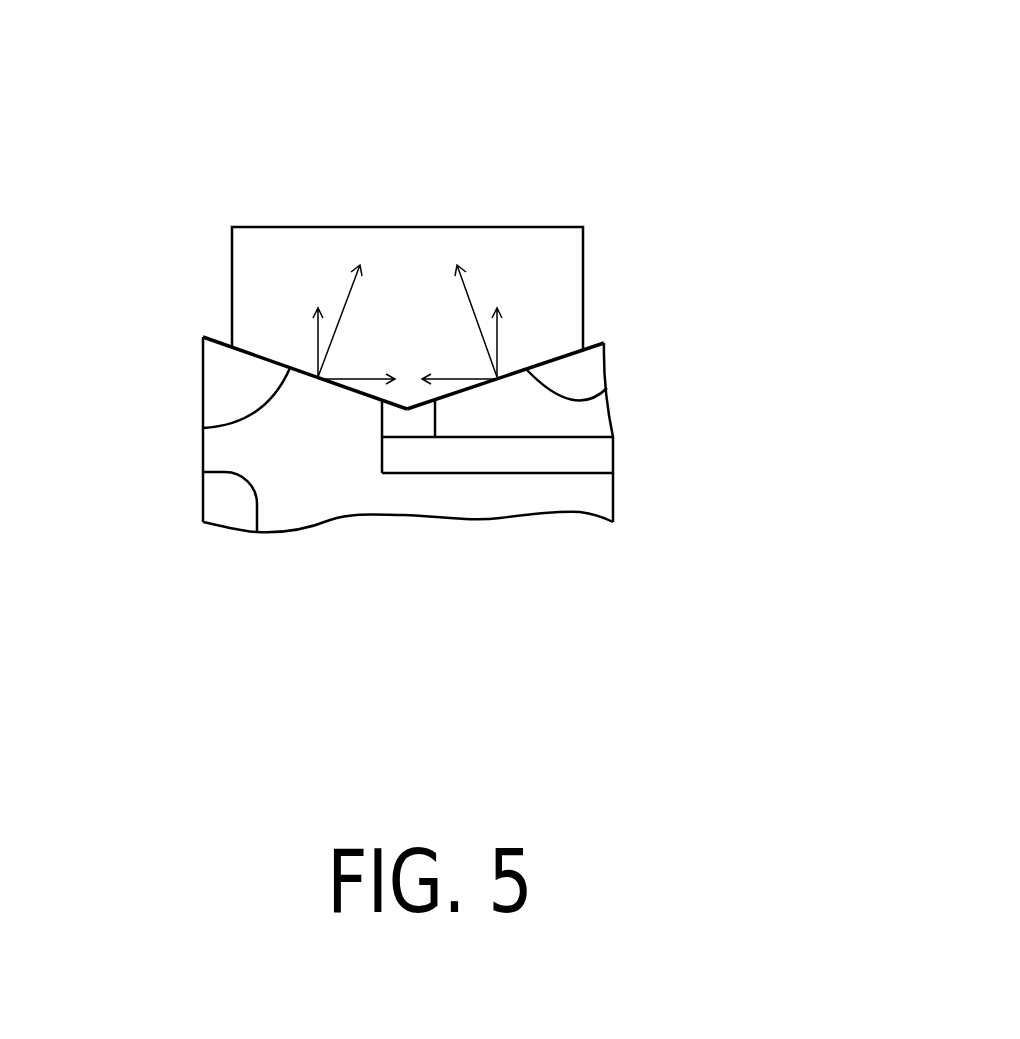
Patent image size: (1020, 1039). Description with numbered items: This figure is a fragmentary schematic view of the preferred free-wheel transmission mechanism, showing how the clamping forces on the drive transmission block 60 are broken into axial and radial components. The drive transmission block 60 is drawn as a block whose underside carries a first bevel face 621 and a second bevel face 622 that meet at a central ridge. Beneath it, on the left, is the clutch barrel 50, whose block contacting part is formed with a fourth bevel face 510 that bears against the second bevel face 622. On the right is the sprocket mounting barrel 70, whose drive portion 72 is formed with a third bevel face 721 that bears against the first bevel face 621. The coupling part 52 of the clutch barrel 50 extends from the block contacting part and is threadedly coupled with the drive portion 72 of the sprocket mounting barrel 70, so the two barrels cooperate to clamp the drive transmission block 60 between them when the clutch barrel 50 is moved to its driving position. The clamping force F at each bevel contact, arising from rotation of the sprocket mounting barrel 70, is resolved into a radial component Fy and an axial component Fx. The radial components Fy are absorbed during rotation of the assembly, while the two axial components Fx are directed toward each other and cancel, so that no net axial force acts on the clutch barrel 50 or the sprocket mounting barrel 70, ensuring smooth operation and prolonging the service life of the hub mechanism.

The drive transmission block 60 is at (524, 195).
The second bevel face 622 is at (248, 350).
The first bevel face 621 is at (558, 357).
The third bevel face 721 is at (600, 393).
The sprocket mounting barrel 70 is at (620, 417).
The fourth bevel face 510 is at (203, 430).
The clutch barrel 50 is at (170, 483).
The coupling part 52 is at (546, 554).
The drive portion 72 is at (577, 457).